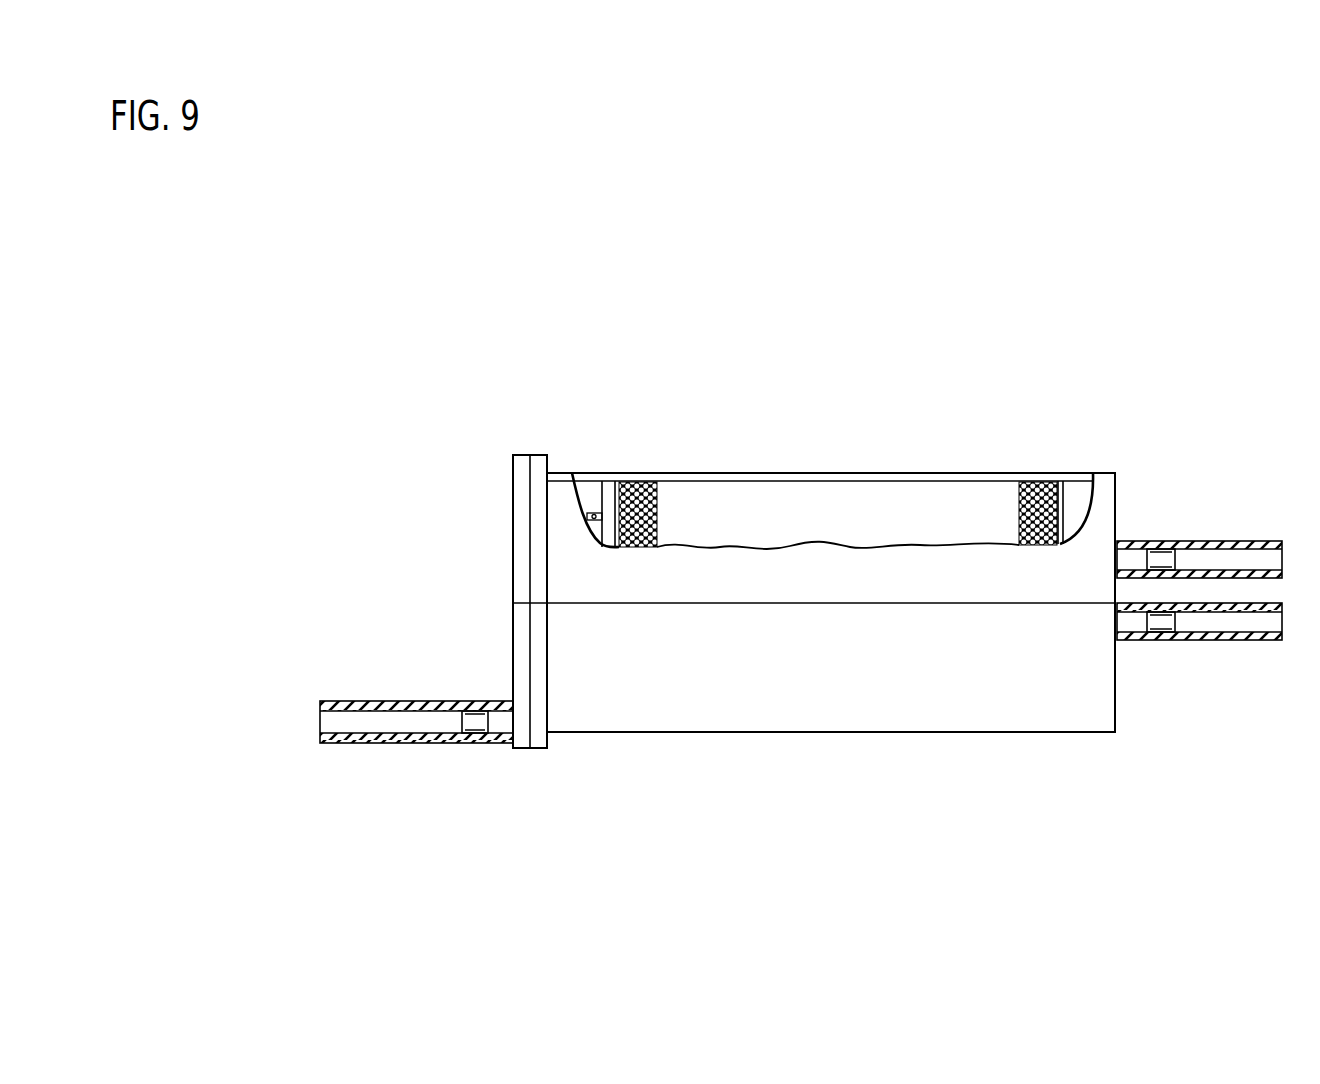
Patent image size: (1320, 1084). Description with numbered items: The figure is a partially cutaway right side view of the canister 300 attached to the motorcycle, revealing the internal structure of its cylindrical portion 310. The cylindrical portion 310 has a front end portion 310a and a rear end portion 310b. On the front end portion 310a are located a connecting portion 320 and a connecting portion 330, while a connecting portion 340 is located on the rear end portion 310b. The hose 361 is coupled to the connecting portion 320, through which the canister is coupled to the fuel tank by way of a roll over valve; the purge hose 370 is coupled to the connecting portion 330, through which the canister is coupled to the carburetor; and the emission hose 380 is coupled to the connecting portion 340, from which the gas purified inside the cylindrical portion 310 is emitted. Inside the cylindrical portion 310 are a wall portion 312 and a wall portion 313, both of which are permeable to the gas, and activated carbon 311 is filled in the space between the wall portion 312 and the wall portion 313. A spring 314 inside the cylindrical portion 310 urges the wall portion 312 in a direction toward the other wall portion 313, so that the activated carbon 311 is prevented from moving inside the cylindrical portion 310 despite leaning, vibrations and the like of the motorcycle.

The canister 300 is at (1181, 415).
The cylindrical portion 310 is at (908, 474).
The front end portion 310a is at (1067, 723).
The rear end portion 310b is at (560, 637).
The activated carbon 311 is at (1022, 482).
The wall portion 312 is at (609, 482).
The wall portion 313 is at (1060, 482).
The spring 314 is at (594, 513).
The connecting portion 320 is at (1163, 633).
The connecting portion 330 is at (1153, 548).
The connecting portion 340 is at (494, 744).
The hose 361 is at (1258, 641).
The purge hose 370 is at (1257, 541).
The emission hose 380 is at (370, 744).